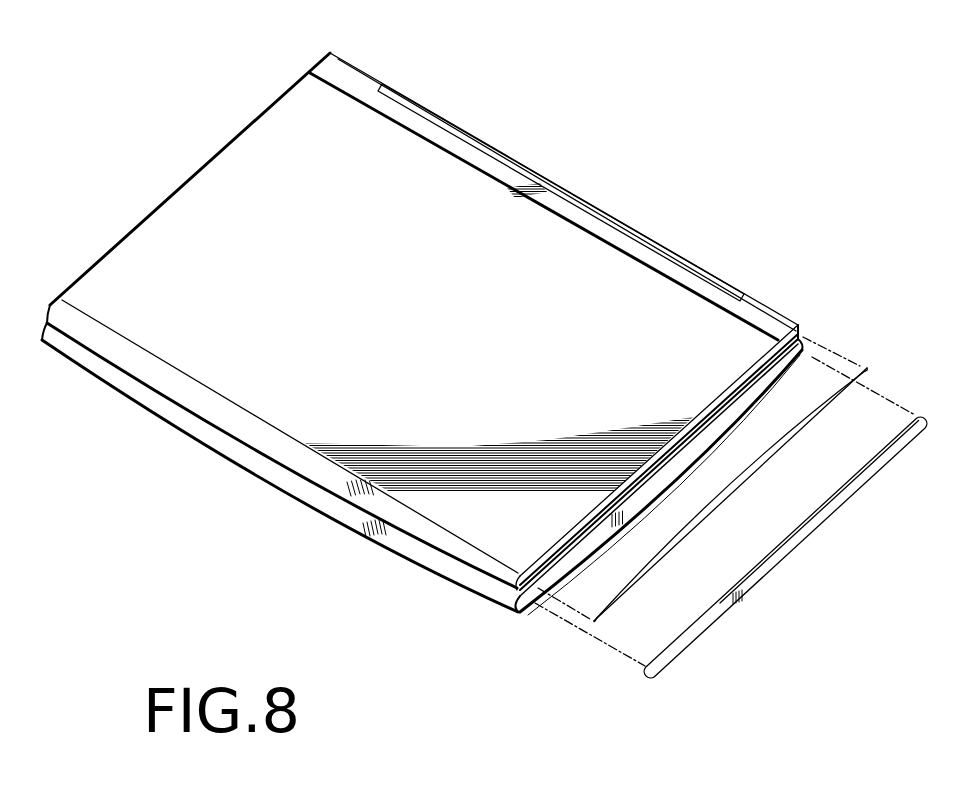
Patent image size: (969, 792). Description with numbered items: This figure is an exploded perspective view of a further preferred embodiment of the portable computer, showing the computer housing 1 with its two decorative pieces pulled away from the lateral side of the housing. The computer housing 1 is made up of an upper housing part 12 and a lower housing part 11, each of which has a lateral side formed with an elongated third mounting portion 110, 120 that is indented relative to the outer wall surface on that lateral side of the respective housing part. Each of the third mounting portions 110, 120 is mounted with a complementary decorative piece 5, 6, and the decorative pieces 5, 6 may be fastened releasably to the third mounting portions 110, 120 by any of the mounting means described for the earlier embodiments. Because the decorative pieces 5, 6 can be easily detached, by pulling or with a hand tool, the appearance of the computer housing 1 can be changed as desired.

The computer housing 1 is at (442, 367).
The lower housing part 11 is at (455, 583).
The upper housing part 12 is at (412, 517).
The third mounting portion 110 is at (741, 372).
The third mounting portion 120 is at (678, 460).
The decorative piece 5 is at (873, 380).
The decorative piece 6 is at (810, 533).